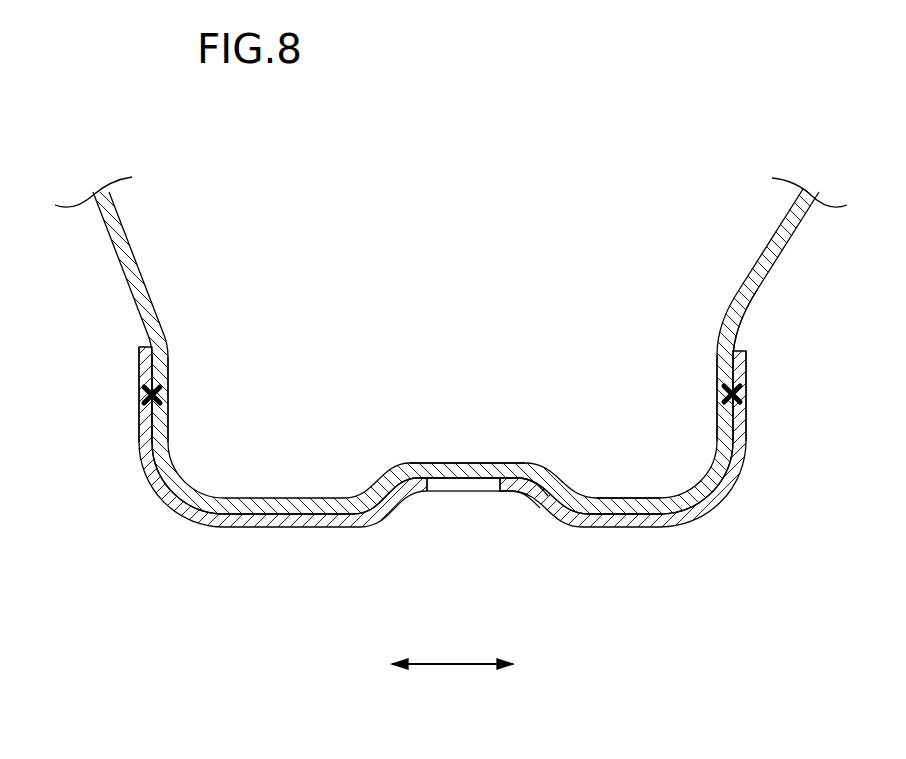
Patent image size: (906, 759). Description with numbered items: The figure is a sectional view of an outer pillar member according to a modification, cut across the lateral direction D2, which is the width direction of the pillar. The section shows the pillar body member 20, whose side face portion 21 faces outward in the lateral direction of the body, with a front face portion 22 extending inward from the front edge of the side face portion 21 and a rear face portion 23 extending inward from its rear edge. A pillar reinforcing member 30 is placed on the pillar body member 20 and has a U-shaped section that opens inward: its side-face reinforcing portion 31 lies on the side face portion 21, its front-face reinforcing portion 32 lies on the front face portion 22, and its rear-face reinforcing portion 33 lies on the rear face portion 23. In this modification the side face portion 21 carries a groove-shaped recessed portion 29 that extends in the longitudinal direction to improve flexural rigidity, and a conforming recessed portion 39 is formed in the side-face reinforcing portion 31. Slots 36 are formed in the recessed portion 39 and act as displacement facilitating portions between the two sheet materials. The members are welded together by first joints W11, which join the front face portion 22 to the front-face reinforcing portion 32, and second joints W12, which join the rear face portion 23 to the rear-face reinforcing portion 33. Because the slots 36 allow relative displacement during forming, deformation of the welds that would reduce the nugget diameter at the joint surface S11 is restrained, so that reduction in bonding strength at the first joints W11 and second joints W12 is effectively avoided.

The pillar body member 20 is at (754, 243).
The side face portion 21 is at (621, 498).
The front face portion 22 is at (717, 378).
The rear face portion 23 is at (169, 378).
The recessed portion 29 is at (465, 463).
The pillar reinforcing member 30 is at (257, 540).
The side-face reinforcing portion 31 is at (634, 528).
The front-face reinforcing portion 32 is at (748, 420).
The rear-face reinforcing portion 33 is at (137, 427).
The slots 36 is at (460, 492).
The recessed portion 39 is at (518, 492).
The joint surface S11 is at (734, 352).
The first joints W11 is at (742, 395).
The second joints W12 is at (143, 394).
The lateral direction D2 is at (455, 666).